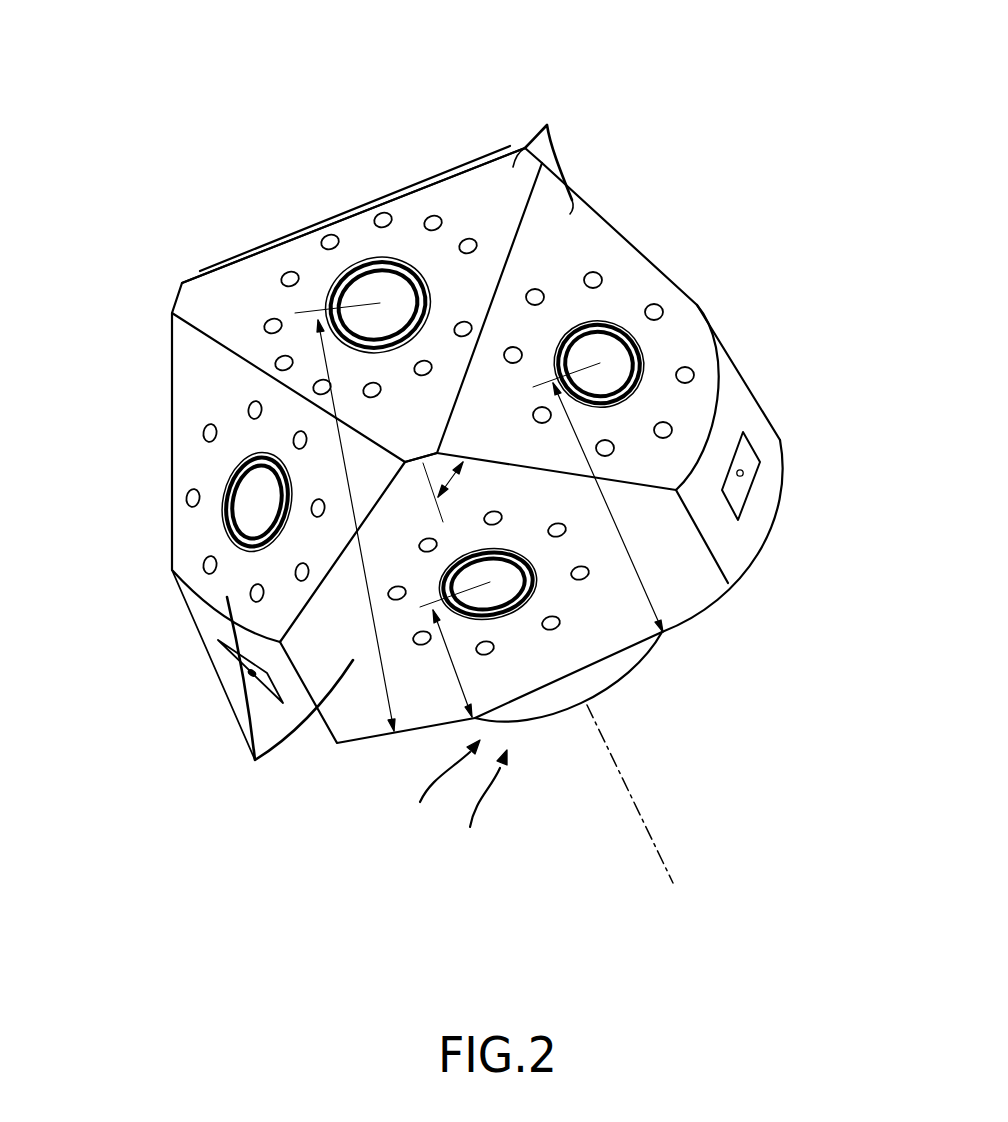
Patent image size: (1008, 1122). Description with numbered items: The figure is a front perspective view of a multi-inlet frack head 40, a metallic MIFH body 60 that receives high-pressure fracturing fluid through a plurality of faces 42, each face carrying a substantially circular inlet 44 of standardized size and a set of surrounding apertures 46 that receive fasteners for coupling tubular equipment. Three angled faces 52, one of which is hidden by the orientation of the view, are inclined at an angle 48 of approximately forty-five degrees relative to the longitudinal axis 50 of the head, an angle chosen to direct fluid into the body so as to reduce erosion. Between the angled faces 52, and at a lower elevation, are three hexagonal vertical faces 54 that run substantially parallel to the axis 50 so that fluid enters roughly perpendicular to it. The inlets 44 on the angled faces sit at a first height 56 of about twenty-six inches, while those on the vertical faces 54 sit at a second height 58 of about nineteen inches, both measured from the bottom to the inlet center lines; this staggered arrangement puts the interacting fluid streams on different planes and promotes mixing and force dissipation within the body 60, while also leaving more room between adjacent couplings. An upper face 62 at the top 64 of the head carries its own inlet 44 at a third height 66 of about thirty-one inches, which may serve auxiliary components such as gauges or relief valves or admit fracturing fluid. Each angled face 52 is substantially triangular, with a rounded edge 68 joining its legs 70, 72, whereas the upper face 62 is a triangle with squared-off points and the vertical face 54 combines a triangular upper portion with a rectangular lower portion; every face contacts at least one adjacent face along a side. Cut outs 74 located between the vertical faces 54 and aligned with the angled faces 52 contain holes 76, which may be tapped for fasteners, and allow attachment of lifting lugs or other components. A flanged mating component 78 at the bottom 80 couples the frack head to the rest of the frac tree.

The multi-inlet frack head 40 is at (461, 456).
The face 42 is at (372, 444).
The inlet 44 is at (377, 293).
The aperture 46 is at (284, 363).
The angle 48 is at (455, 482).
The longitudinal axis 50 is at (636, 797).
The angled face 52 is at (452, 138).
The vertical face 54 is at (716, 586).
The first height 56 is at (598, 497).
The second height 58 is at (455, 649).
The MIFH body 60 is at (770, 513).
The upper face 62 is at (294, 194).
The top 64 is at (490, 172).
The third height 66 is at (345, 517).
The rounded edge 68 is at (720, 413).
The leg 70 is at (478, 455).
The leg 72 is at (587, 208).
The cut out 74 is at (799, 456).
The hole 76 is at (743, 473).
The mating component 78 is at (439, 789).
The bottom 80 is at (482, 807).